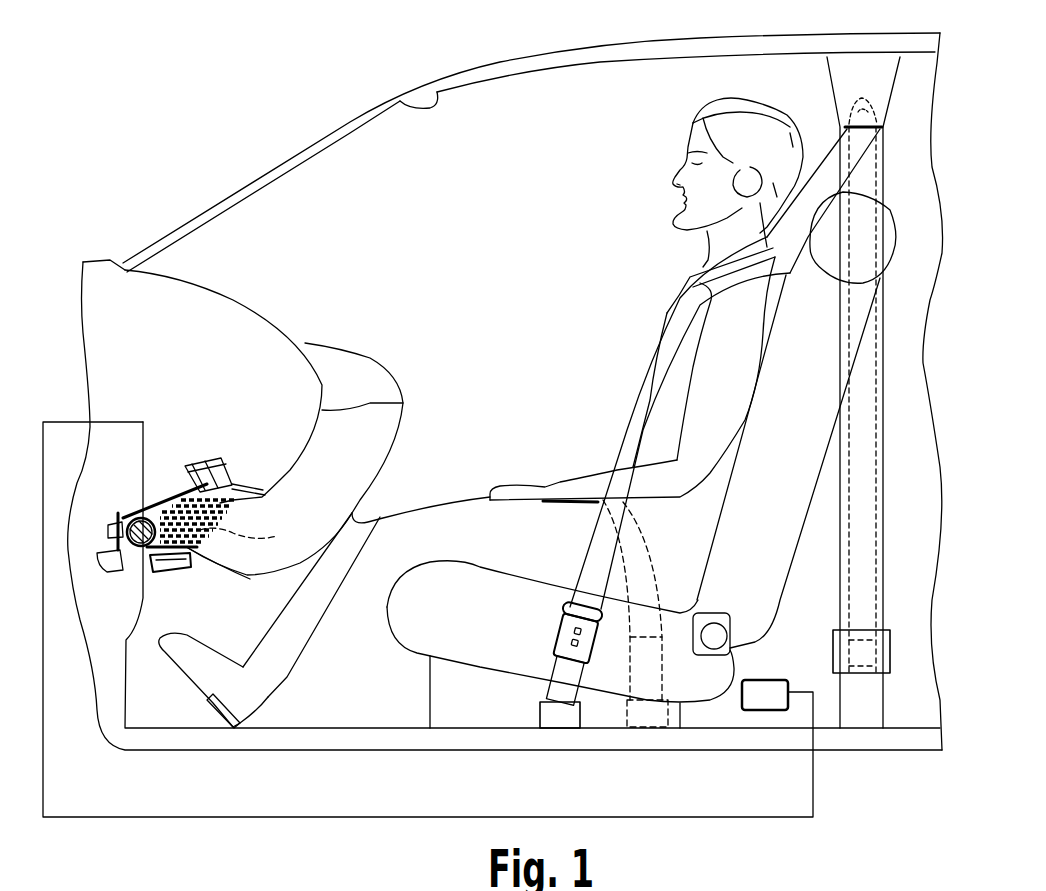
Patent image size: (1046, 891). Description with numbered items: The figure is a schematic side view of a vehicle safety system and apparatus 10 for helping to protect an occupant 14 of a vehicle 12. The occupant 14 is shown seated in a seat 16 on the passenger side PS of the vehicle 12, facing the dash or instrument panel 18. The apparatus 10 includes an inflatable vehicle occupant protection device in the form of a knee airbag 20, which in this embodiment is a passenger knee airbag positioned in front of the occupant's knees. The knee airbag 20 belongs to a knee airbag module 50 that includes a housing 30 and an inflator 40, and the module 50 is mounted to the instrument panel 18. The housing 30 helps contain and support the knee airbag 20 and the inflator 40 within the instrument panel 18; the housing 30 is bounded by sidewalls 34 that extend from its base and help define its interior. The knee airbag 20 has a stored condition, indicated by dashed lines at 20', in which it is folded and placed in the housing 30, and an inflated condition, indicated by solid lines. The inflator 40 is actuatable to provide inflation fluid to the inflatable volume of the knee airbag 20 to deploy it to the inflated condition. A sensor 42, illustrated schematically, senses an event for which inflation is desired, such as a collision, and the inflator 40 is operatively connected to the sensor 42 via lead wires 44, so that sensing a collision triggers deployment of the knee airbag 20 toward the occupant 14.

The vehicle safety system and apparatus 10 is at (143, 393).
The vehicle 12 is at (270, 140).
The passenger side PS is at (500, 105).
The occupant 14 is at (643, 220).
The seat 16 is at (810, 407).
The instrument panel 18 is at (273, 363).
The knee airbag 20 is at (313, 461).
The stored condition of knee airbag 20' is at (260, 534).
The housing 30 is at (140, 512).
The sidewalls 34 is at (200, 556).
The inflator 40 is at (143, 517).
The sensor 42 is at (763, 700).
The lead wires 44 is at (813, 778).
The knee airbag module 50 is at (142, 597).